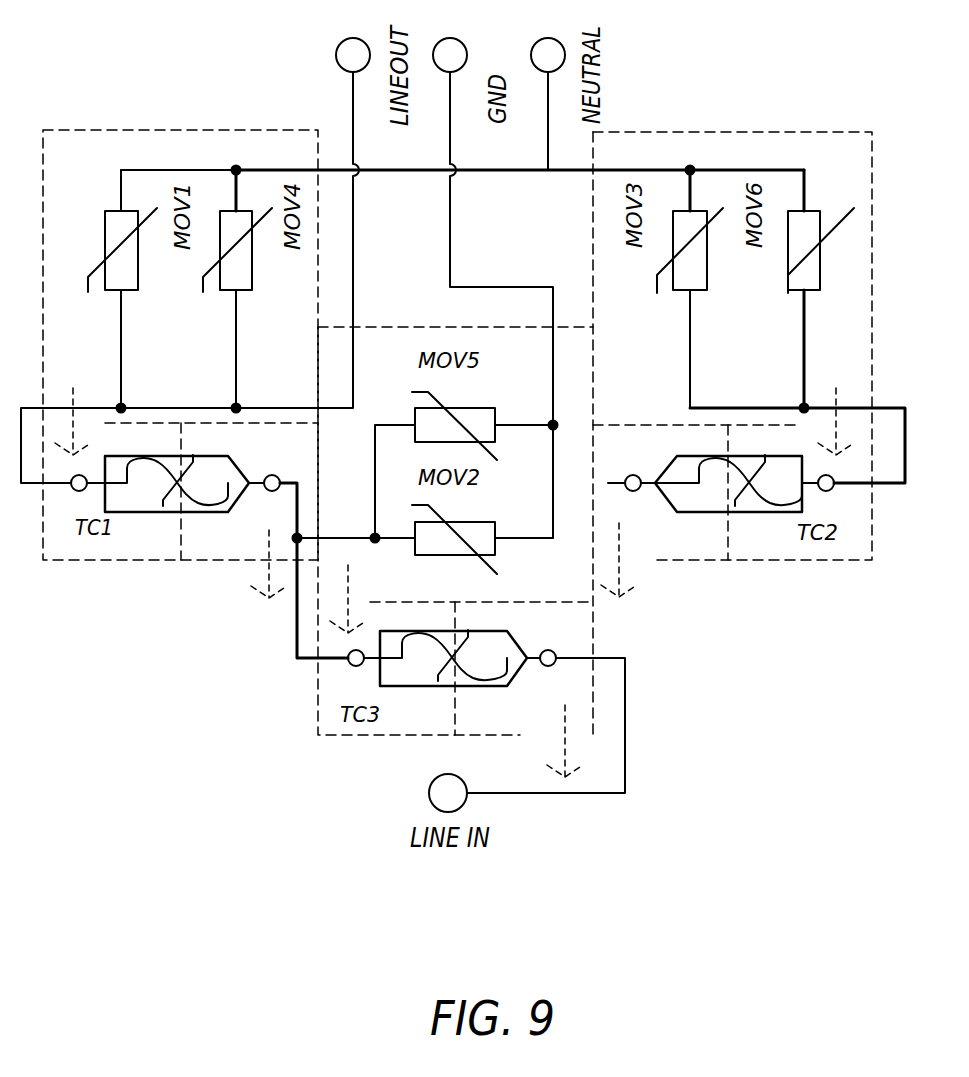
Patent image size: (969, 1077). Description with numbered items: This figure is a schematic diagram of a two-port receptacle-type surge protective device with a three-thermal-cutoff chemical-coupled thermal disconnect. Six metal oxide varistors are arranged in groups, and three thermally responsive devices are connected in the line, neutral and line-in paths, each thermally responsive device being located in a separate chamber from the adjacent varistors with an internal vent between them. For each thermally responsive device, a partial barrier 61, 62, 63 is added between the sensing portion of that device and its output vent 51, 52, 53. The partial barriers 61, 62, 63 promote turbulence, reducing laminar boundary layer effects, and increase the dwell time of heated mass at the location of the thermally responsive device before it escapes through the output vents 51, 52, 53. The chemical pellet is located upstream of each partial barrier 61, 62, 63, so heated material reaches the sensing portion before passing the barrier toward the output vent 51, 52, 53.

The output vent 51 is at (262, 560).
The output vent 52 is at (648, 558).
The output vent 53 is at (592, 695).
The partial barrier 61 is at (181, 540).
The partial barrier 62 is at (728, 540).
The partial barrier 63 is at (453, 715).